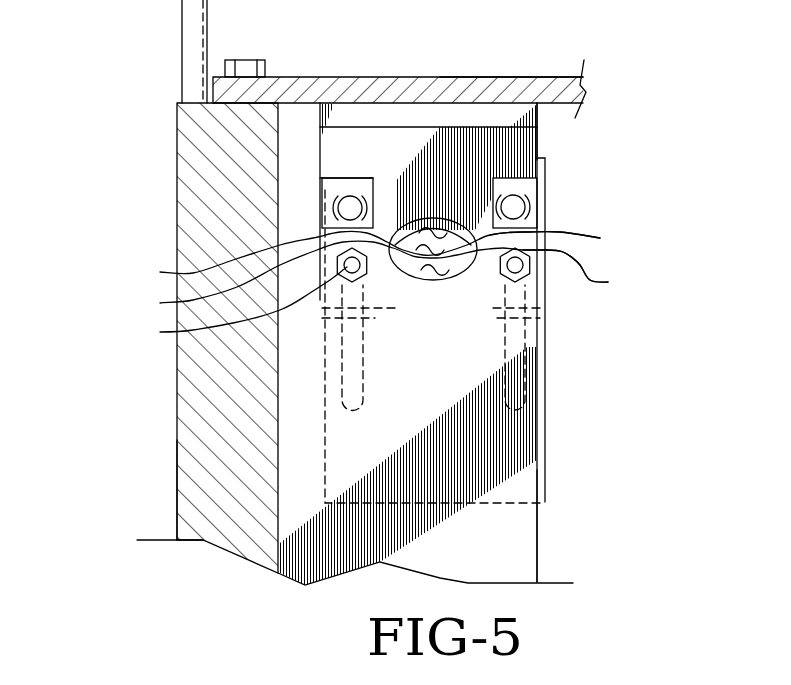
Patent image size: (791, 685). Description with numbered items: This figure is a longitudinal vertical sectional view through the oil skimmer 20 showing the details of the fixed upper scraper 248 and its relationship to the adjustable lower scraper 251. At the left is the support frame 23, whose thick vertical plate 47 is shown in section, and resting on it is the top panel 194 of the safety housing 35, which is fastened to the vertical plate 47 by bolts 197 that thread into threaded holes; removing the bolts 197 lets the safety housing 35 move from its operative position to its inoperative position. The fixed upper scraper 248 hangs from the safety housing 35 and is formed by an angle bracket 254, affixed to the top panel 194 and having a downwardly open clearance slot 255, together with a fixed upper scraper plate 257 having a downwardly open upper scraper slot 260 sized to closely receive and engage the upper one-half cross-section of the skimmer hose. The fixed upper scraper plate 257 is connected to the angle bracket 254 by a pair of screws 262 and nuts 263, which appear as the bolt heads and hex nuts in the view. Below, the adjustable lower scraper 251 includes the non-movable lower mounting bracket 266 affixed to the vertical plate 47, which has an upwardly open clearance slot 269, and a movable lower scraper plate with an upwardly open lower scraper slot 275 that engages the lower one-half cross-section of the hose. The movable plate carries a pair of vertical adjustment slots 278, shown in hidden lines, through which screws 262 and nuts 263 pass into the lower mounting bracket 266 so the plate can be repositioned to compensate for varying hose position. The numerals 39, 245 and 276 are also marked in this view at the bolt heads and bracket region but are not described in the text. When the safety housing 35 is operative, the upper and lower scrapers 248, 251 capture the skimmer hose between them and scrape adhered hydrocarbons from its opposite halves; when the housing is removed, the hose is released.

The oil skimmer 20 is at (673, 70).
The support frame 23 is at (176, 414).
The safety housing 35 is at (501, 73).
The support bracket 39 is at (608, 218).
The vertical plate 47 is at (178, 468).
The top panel 194 is at (390, 77).
The bolts 197 is at (250, 60).
The bolt head 245 is at (345, 205).
The fixed upper scraper 248 is at (559, 138).
The adjustable lower scraper 251 is at (563, 337).
The angle bracket 254 is at (392, 168).
The clearance slot 255 is at (547, 226).
The fixed upper scraper plate 257 is at (437, 180).
The upper scraper slot 260 is at (356, 279).
The screws 262 is at (354, 266).
The nuts 263 is at (381, 298).
The lower mounting bracket 266 is at (540, 547).
The clearance slot 269 is at (478, 268).
The lower scraper slot 275 is at (354, 258).
The wire lead 276 is at (570, 242).
The vertical adjustment slots 278 is at (320, 367).